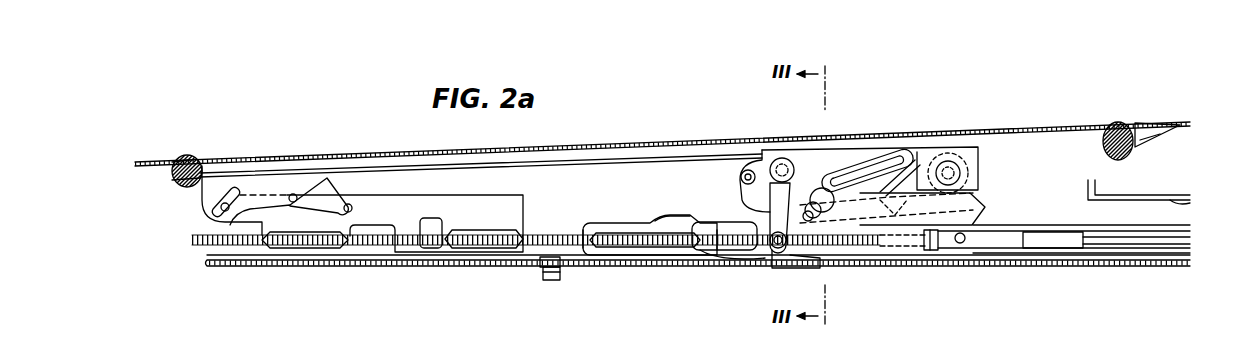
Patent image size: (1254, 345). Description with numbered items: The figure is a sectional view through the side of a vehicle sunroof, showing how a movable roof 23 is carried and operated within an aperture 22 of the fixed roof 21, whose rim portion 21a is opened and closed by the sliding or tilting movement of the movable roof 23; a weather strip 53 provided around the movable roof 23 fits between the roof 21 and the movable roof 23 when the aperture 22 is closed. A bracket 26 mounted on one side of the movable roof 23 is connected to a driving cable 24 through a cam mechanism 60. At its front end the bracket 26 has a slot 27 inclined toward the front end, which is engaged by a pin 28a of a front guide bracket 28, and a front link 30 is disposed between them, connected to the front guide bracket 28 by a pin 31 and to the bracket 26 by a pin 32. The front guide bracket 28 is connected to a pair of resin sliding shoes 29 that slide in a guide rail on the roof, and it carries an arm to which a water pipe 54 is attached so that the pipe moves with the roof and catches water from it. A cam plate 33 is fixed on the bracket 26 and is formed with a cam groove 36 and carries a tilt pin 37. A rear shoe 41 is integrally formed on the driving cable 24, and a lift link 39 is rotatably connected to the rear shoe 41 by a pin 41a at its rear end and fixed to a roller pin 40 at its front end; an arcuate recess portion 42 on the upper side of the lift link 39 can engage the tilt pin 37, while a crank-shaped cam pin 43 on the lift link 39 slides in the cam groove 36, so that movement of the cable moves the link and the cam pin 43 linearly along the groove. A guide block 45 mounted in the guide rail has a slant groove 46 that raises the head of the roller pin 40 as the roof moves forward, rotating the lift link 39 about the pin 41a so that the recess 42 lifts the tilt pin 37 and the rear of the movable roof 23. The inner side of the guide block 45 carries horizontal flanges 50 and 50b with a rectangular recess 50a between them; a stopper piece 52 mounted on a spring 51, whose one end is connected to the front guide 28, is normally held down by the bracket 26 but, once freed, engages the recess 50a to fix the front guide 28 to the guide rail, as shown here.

The fixed roof 21 is at (1153, 126).
The rim portion 21a is at (1150, 142).
The aperture 22 is at (1162, 184).
The movable roof 23 is at (962, 132).
The driving cable 24 is at (190, 240).
The bracket 26 is at (577, 160).
The slot 27 is at (234, 197).
The front guide bracket 28 is at (393, 197).
The pin 28a is at (220, 200).
The sliding shoes 29 is at (318, 249).
The front link 30 is at (327, 200).
The pin 31 is at (348, 204).
The pin 32 is at (293, 194).
The cam plate 33 is at (805, 160).
The cam groove 36 is at (897, 170).
The tilt pin 37 is at (746, 168).
The lift link 39 is at (980, 212).
The roller pin 40 is at (773, 250).
The rear shoe 41 is at (1017, 233).
The pin 41a is at (963, 244).
The arcuate recess portion 42 is at (800, 225).
The cam pin 43 is at (847, 172).
The guide block 45 is at (733, 252).
The slant groove 46 is at (723, 237).
The flange 50 is at (627, 244).
The rectangular recess 50a is at (647, 237).
The flange 50b is at (677, 247).
The spring 51 is at (490, 256).
The stopper piece 52 is at (677, 217).
The weather strip 53 is at (1118, 124).
The water pipe 54 is at (1192, 204).
The cam mechanism 60 is at (868, 160).